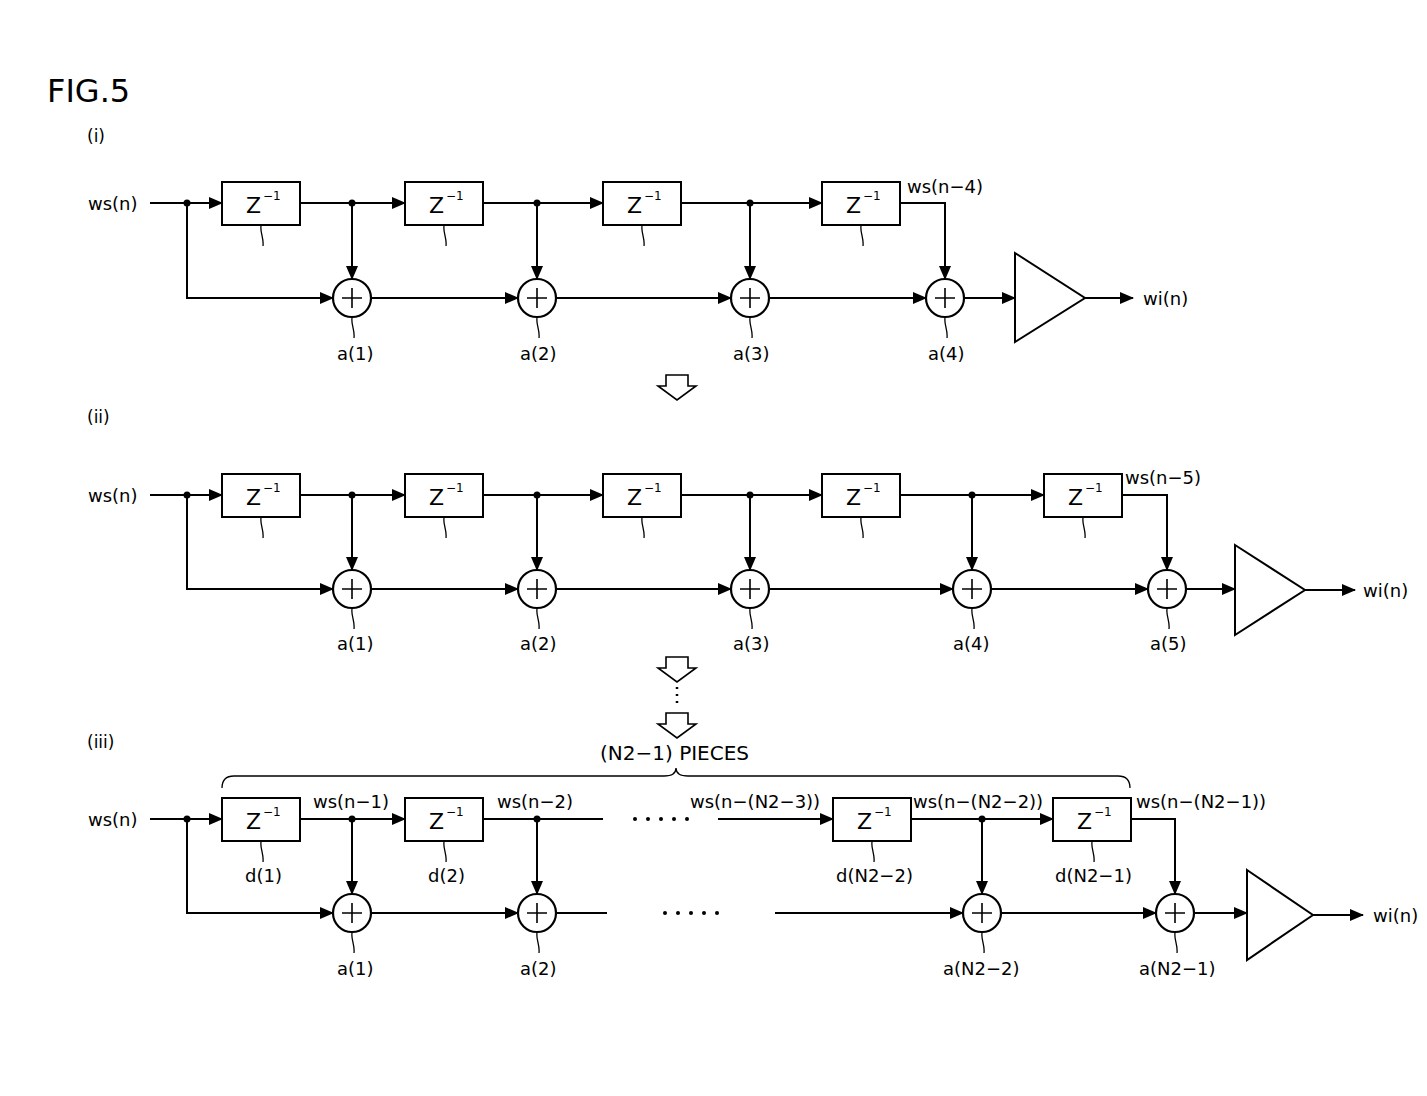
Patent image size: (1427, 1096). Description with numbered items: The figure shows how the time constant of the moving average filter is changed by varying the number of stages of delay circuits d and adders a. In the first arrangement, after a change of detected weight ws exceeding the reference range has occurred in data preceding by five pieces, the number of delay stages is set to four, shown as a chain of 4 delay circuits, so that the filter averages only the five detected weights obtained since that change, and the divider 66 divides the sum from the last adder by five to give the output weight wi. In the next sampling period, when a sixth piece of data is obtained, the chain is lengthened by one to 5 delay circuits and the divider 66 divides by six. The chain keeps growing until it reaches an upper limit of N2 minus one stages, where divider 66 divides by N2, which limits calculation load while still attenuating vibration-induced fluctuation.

The divider 66 is at (1062, 285).
The group of 4 delay elements (4 PIECES) 4 is at (900, 172).
The group of 5 delay elements (5 PIECES) 5 is at (1120, 464).